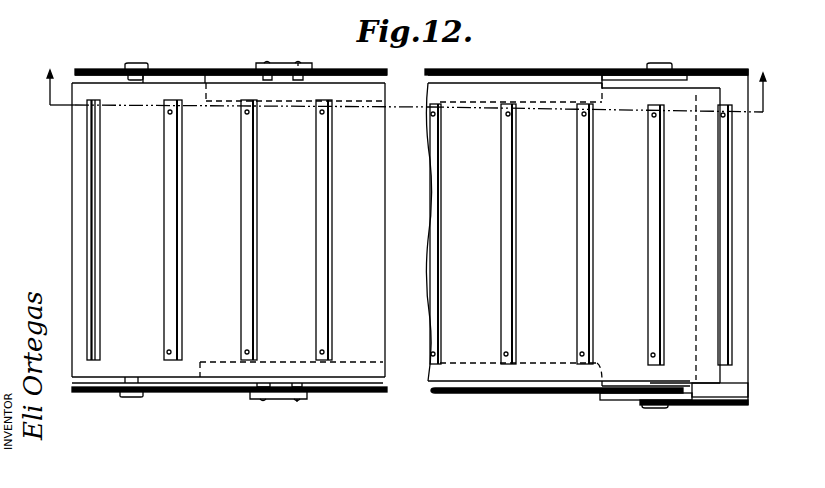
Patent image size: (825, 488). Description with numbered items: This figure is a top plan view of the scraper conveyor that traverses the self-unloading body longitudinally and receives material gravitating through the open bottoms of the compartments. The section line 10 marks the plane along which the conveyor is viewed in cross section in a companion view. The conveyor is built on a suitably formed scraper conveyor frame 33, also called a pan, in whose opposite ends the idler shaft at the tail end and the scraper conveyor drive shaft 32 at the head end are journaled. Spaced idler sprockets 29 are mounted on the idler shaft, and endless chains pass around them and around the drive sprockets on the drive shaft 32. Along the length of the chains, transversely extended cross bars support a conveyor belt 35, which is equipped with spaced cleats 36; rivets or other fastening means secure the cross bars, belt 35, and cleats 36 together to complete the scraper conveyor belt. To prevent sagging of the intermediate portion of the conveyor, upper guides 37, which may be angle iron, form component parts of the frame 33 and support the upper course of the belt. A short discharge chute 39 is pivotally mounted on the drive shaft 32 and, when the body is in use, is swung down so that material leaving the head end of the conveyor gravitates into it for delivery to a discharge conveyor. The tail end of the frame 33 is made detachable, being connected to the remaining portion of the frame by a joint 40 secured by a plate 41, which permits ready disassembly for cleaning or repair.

The section line 10 is at (405, 92).
The idler sprocket 29 is at (131, 78).
The scraper conveyor drive shaft 32 is at (650, 83).
The scraper conveyor frame 33 is at (195, 70).
The conveyor belt 35 is at (107, 181).
The cleat 36 is at (180, 182).
The upper guide 37 is at (542, 82).
The discharge chute 39 is at (720, 78).
The joint 40 is at (283, 68).
The plate 41 is at (302, 64).